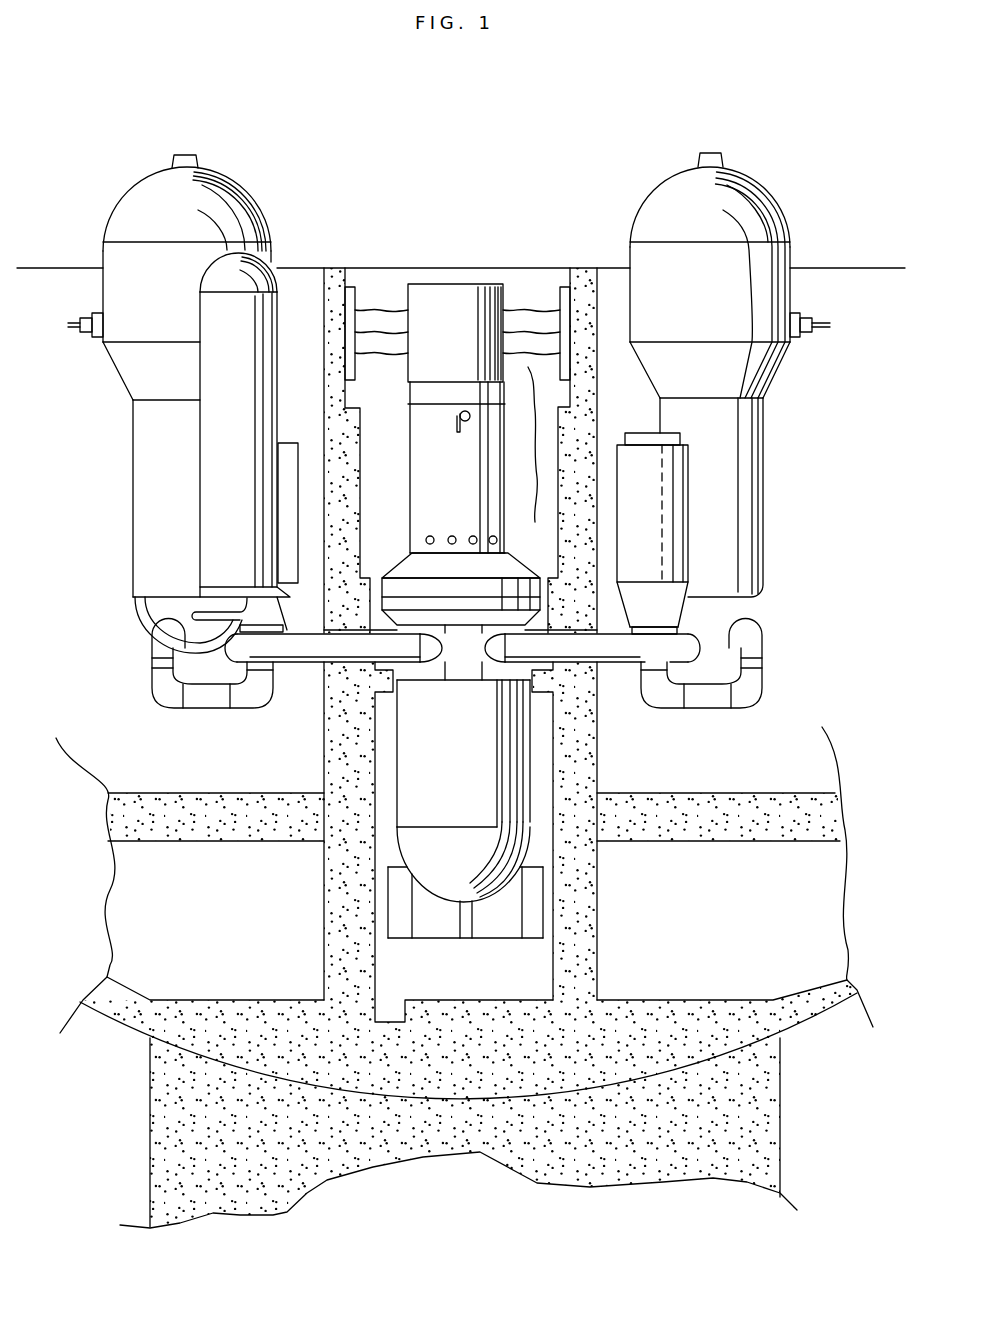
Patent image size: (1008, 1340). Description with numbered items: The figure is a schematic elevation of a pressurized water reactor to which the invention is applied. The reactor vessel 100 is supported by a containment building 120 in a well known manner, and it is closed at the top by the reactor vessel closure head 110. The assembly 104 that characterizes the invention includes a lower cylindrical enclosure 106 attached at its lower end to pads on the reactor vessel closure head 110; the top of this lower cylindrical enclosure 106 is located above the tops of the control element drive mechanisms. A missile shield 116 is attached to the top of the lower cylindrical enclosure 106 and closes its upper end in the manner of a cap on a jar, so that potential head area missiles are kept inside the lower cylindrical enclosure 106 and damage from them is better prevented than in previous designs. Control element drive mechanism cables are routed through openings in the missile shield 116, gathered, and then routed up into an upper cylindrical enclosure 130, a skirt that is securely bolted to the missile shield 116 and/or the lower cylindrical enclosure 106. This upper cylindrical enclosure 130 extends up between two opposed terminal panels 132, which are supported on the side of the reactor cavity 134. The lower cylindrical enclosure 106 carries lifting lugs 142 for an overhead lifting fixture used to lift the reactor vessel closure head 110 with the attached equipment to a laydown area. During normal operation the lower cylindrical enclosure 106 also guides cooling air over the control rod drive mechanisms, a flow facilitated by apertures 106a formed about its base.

The reactor vessel 100 is at (420, 776).
The assembly 104 is at (537, 432).
The lower cylindrical enclosure 106 is at (303, 340).
The apertures 106a is at (452, 536).
The reactor vessel closure head 110 is at (417, 567).
The missile shield 116 is at (423, 395).
The containment building 120 is at (834, 198).
The upper cylindrical enclosure 130 is at (427, 302).
The terminal panels 132 is at (348, 287).
The reactor cavity 134 is at (533, 522).
The lifting lugs 142 is at (468, 420).